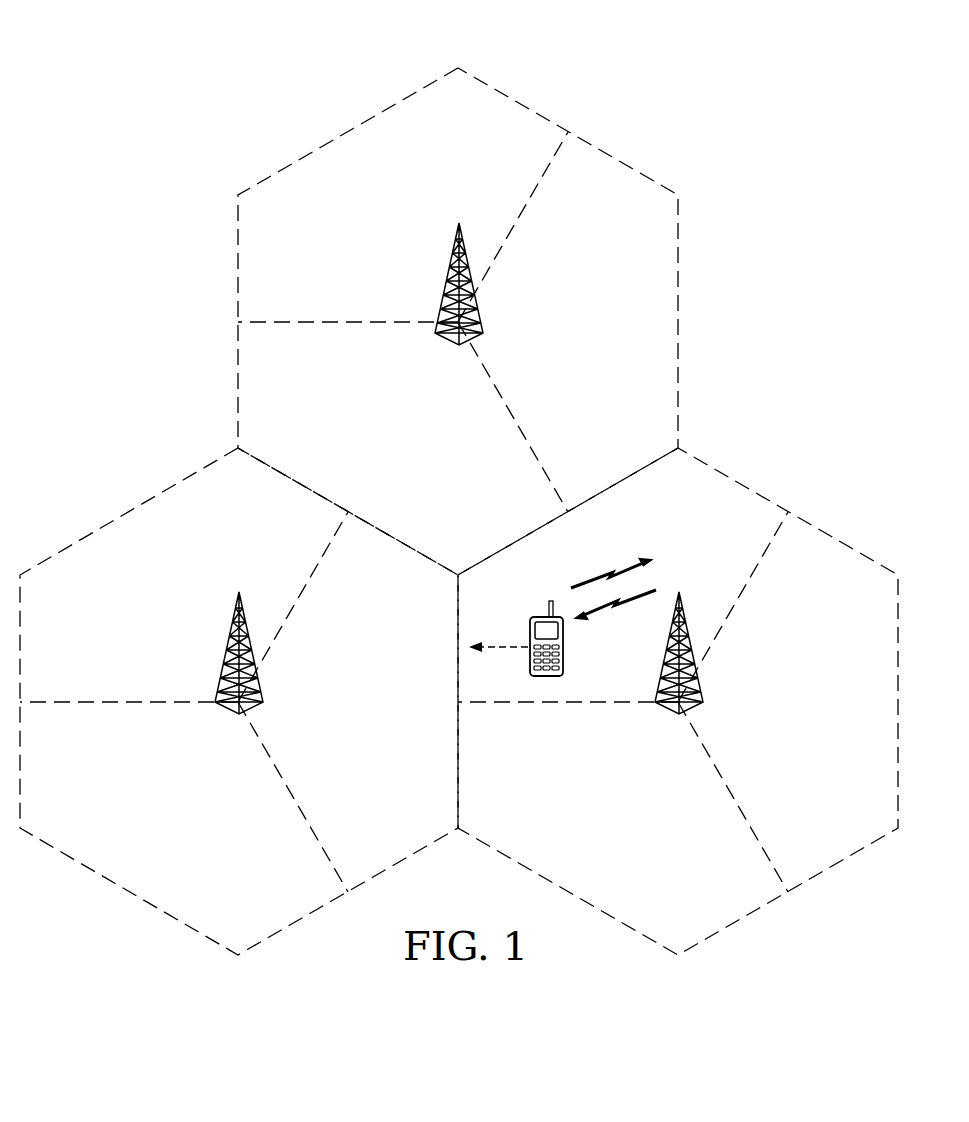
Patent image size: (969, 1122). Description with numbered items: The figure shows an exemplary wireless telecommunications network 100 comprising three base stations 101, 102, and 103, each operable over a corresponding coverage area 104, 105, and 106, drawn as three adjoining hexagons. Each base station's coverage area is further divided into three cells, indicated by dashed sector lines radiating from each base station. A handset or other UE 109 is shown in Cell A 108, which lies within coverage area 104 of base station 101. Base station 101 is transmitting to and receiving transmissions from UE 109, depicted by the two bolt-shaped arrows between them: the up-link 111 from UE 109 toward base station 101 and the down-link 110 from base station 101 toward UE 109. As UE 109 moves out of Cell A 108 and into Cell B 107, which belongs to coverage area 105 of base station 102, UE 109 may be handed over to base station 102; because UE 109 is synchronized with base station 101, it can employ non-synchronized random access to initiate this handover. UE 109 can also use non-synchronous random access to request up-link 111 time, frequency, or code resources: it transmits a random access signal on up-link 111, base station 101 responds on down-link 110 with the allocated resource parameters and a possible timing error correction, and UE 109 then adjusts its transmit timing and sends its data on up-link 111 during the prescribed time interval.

The wireless telecommunications network 100 is at (243, 78).
The base station 101 is at (699, 688).
The base station 102 is at (225, 656).
The base station 103 is at (440, 290).
The coverage area 104 is at (752, 912).
The coverage area 105 is at (140, 898).
The coverage area 106 is at (605, 150).
The Cell B 107 is at (350, 735).
The Cell A 108 is at (657, 548).
The UE 109 is at (539, 612).
The down-link 110 is at (618, 612).
The up-link 111 is at (612, 581).